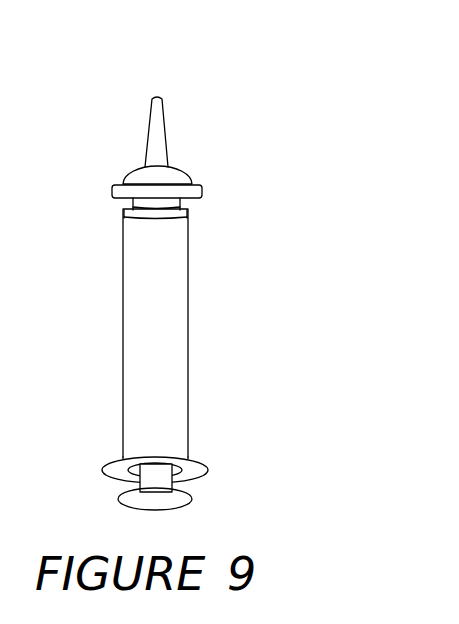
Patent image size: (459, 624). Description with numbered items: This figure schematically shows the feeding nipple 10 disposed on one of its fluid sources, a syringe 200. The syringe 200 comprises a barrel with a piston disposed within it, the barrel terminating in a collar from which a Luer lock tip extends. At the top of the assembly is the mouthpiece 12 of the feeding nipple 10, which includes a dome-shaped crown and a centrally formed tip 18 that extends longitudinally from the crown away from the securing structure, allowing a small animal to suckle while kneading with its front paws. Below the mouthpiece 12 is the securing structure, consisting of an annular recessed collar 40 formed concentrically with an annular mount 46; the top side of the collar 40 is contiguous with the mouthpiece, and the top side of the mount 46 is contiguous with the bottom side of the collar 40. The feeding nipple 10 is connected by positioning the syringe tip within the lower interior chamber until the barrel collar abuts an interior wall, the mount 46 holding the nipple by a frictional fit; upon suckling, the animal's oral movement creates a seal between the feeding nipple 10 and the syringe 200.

The feeding nipple 10 is at (271, 273).
The mouthpiece 12 is at (205, 133).
The tip 18 is at (185, 105).
The annular recessed collar 40 is at (190, 202).
The annular mount 46 is at (191, 218).
The syringe 200 is at (345, 205).